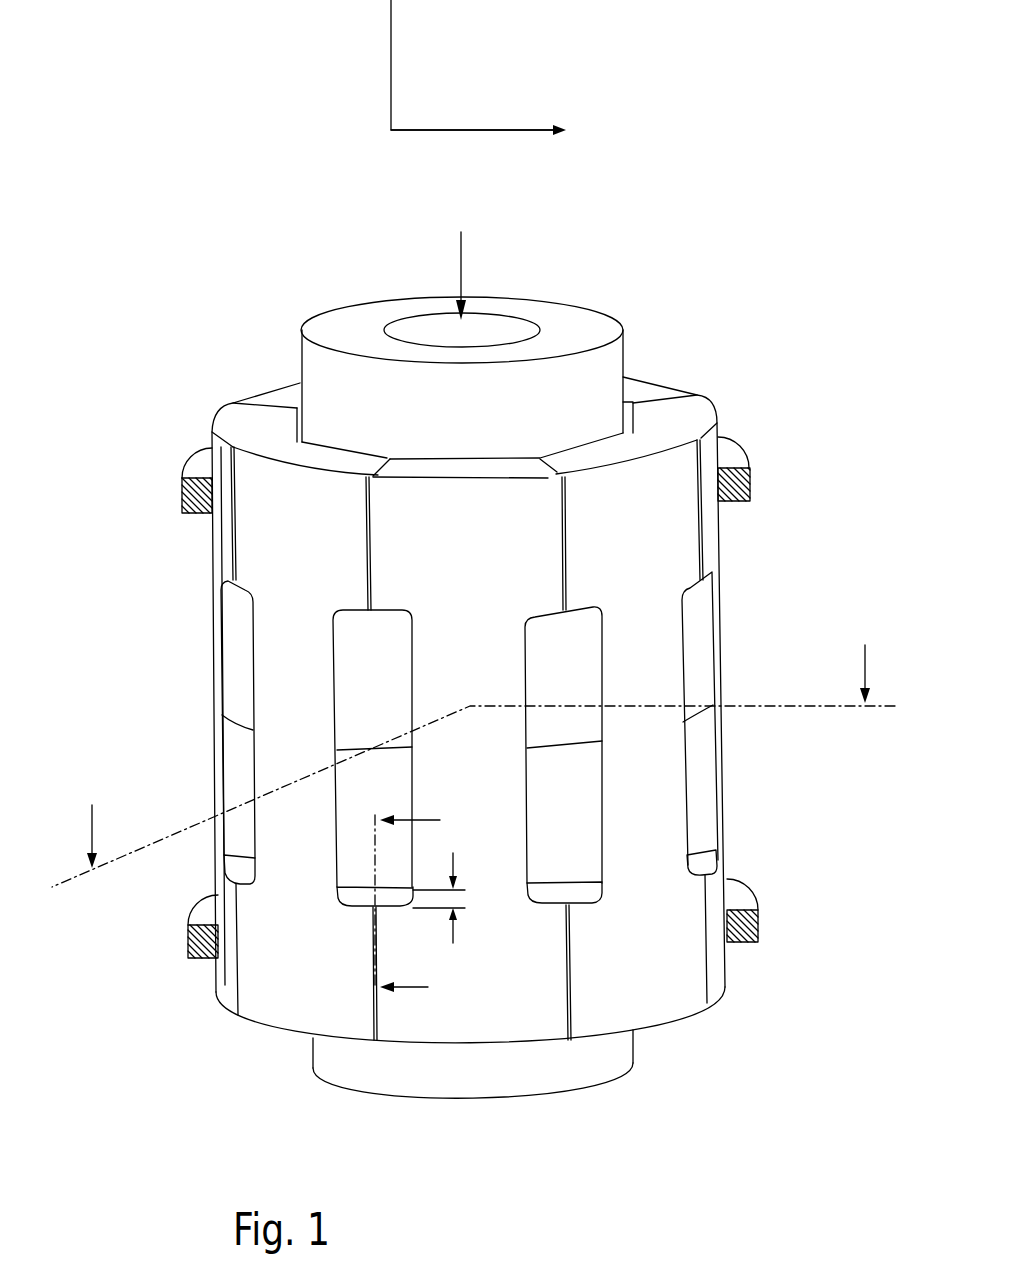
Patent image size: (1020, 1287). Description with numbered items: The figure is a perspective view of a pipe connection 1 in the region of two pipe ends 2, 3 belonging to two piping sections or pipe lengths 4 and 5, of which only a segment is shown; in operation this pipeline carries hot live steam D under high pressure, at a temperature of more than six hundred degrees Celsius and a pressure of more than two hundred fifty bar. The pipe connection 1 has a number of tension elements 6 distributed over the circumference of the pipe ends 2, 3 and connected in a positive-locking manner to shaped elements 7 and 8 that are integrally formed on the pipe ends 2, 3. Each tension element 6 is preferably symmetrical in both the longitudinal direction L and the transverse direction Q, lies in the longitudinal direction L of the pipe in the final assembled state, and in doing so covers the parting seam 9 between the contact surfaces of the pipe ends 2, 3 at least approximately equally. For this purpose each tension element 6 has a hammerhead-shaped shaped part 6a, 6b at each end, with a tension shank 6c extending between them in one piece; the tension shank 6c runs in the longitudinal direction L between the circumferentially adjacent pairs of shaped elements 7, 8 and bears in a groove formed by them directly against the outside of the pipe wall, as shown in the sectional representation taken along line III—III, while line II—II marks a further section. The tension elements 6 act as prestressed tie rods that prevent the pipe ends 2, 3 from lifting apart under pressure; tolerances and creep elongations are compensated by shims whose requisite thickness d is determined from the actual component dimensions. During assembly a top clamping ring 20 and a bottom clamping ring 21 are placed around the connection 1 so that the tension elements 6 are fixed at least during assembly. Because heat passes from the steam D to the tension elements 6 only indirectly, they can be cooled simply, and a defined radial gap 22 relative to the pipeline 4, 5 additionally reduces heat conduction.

The pipe connection 1 is at (864, 472).
The pipe end 2 is at (603, 357).
The pipe end 3 is at (607, 1048).
The pipe length 4 is at (568, 298).
The pipe length 5 is at (553, 1097).
The tension element 6 is at (497, 455).
The shaped part 6a is at (318, 457).
The shaped part 6b is at (230, 982).
The tension shank 6c is at (293, 675).
The shaped element 7 is at (240, 632).
The shaped element 8 is at (242, 778).
The parting seam 9 is at (700, 708).
The top clamping ring 20 is at (730, 456).
The bottom clamping ring 21 is at (735, 898).
The radial gap 22 is at (297, 420).
The shim thickness d is at (465, 899).
The hot live steam D is at (462, 247).
The longitudinal direction L is at (391, 38).
The transverse direction Q is at (492, 130).
The section line II— II is at (425, 906).
The section line III— III is at (473, 750).